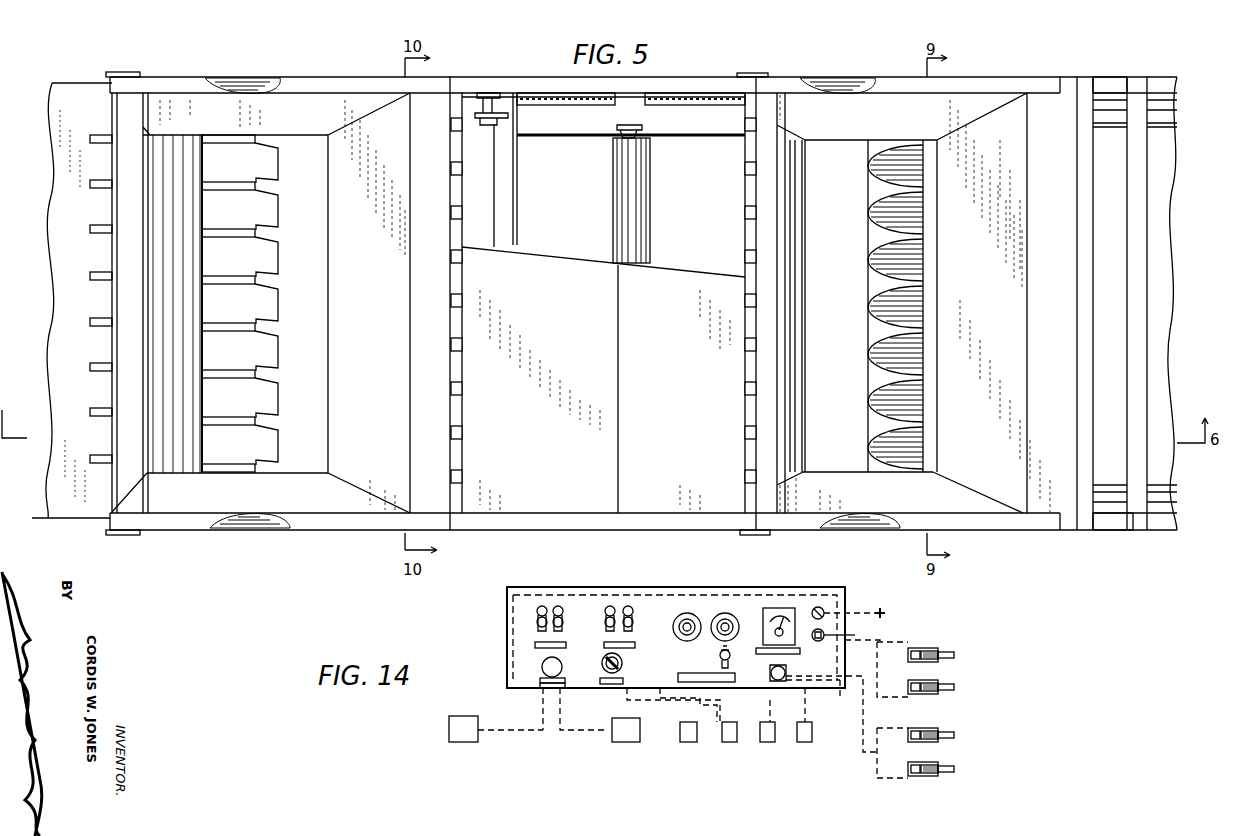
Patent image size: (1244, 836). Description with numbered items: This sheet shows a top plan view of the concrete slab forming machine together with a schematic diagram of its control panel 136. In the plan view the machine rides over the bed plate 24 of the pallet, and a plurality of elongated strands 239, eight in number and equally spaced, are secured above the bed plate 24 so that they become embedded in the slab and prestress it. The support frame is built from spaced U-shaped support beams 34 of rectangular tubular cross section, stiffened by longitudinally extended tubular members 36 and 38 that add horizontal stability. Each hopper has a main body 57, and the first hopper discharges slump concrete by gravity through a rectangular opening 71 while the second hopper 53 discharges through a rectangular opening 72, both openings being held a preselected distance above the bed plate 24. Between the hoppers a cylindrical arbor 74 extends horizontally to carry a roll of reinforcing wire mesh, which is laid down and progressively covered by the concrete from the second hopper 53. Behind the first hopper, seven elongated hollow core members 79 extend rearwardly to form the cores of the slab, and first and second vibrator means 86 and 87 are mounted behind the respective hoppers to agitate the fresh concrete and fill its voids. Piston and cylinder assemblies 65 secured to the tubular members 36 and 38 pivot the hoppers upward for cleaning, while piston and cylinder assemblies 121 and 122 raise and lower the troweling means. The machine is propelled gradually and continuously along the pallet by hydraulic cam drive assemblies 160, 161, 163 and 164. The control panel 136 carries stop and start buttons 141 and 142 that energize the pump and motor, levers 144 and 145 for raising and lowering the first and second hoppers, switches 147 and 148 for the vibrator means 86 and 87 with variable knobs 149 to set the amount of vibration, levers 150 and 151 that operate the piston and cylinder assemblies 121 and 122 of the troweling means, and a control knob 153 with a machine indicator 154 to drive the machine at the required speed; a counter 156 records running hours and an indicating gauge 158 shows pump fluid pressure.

In FIG. 5, the bed plate 24 is at (76, 512).
In FIG. 5, the main body 57 is at (178, 256).
In FIG. 5, the elongated strands 239 is at (100, 185).
In FIG. 5, the rectangular shape opening 71 is at (328, 262).
In FIG. 5, the hydraulic cam drive assembly 161 is at (248, 80).
In FIG. 14, the hydraulic cam drive assembly 161 is at (935, 686).
In FIG. 5, the hydraulic cam drive assembly 160 is at (268, 532).
In FIG. 14, the hydraulic cam drive assembly 160 is at (935, 652).
In FIG. 5, the second hopper 53 is at (678, 198).
In FIG. 5, the cylindrical arbor 74 is at (617, 195).
In FIG. 5, the rectangular shape opening 72 is at (805, 220).
In FIG. 5, the core members 79 is at (905, 400).
In FIG. 5, the hydraulic cam drive assembly 164 is at (842, 85).
In FIG. 14, the hydraulic cam drive assembly 164 is at (935, 767).
In FIG. 5, the hydraulic cam drive assembly 163 is at (865, 530).
In FIG. 14, the hydraulic cam drive assembly 163 is at (935, 733).
In FIG. 5, the U-shaped support beams 34 is at (1140, 362).
In FIG. 5, the tubular member 38 is at (1106, 92).
In FIG. 5, the tubular member 36 is at (1118, 517).
In FIG. 14, the lever 144 is at (545, 605).
In FIG. 14, the lever 145 is at (560, 606).
In FIG. 14, the lever 150 is at (614, 605).
In FIG. 14, the lever 151 is at (632, 606).
In FIG. 14, the counter 156 is at (548, 668).
In FIG. 14, the indicating gauge 158 is at (622, 665).
In FIG. 14, the variable knobs 149 is at (692, 613).
In FIG. 14, the switch 147 is at (720, 658).
In FIG. 14, the switch 148 is at (728, 664).
In FIG. 14, the machine indicator 154 is at (776, 612).
In FIG. 14, the start button 141 is at (820, 608).
In FIG. 14, the control panel 136 is at (845, 610).
In FIG. 14, the stop button 142 is at (849, 640).
In FIG. 14, the control knob 153 is at (787, 672).
In FIG. 14, the piston and cylinder assemblies 65 is at (626, 735).
In FIG. 14, the piston and cylinder assembly 121 is at (687, 732).
In FIG. 14, the piston and cylinder assembly 122 is at (729, 732).
In FIG. 14, the first vibrator means 86 is at (767, 733).
In FIG. 14, the second vibrator means 87 is at (804, 733).